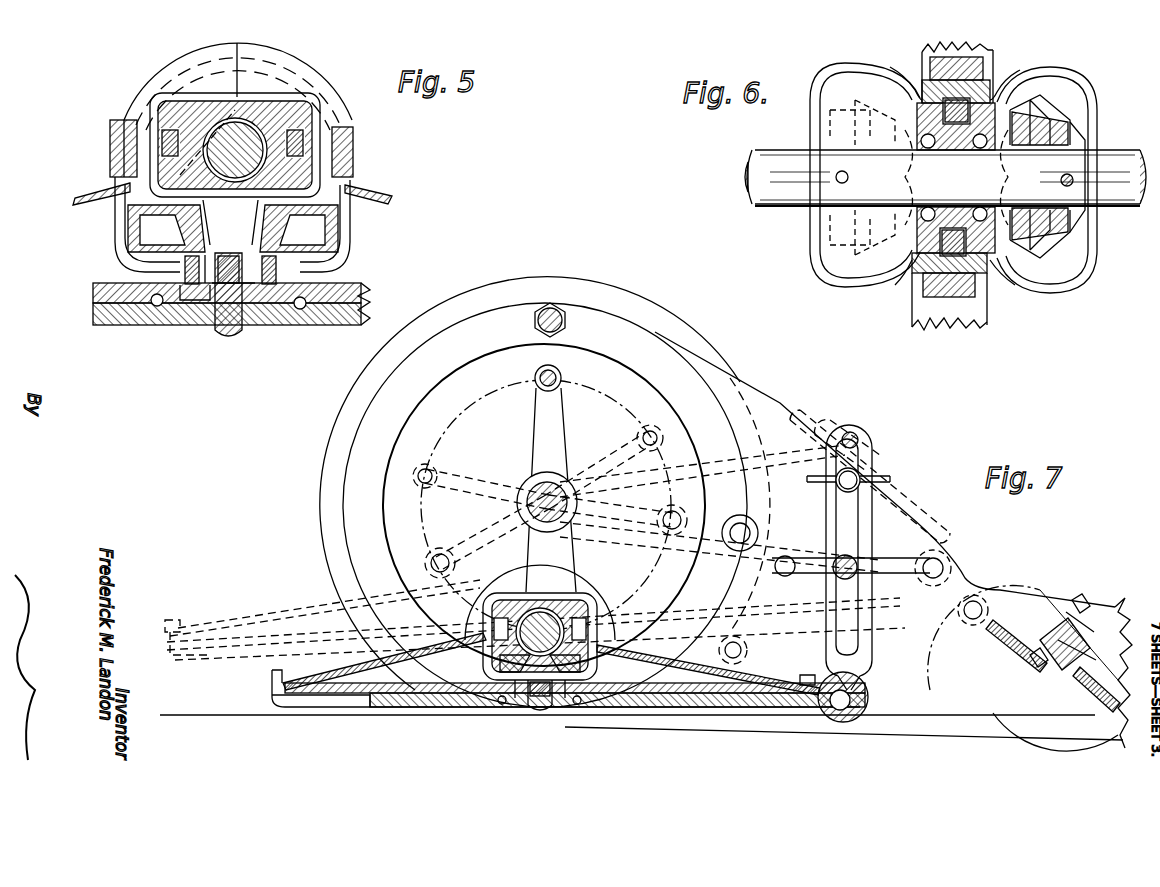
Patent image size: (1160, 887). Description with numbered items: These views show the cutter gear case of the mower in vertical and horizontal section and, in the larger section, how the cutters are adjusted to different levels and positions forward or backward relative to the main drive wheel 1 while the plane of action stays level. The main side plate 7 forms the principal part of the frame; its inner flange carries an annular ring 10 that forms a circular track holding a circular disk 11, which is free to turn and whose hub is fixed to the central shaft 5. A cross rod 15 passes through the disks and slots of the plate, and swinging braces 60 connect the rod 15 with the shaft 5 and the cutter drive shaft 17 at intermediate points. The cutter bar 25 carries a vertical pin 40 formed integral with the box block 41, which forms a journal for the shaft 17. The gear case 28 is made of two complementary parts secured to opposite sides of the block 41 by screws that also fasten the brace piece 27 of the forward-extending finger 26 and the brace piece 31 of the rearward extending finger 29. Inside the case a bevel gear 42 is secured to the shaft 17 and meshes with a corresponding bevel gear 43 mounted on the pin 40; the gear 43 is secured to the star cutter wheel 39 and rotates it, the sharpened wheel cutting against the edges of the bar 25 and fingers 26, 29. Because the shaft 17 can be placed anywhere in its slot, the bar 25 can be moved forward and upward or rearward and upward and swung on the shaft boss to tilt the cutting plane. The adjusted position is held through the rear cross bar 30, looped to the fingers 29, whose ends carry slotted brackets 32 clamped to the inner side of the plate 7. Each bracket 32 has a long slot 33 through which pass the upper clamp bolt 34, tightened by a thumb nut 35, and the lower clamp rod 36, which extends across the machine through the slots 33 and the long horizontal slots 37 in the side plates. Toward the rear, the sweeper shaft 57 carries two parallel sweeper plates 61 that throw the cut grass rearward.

In FIG. 7, the main drive wheel 1 is at (336, 425).
In FIG. 7, the central shaft 5 is at (535, 485).
In FIG. 7, the main side plate 7 is at (765, 400).
In FIG. 7, the annular ring 10 is at (544, 505).
In FIG. 7, the circular disk 11 is at (546, 505).
In FIG. 7, the cross rod 15 is at (560, 378).
In FIG. 5, the cutter drive shaft 17 is at (262, 122).
In FIG. 6, the cutter drive shaft 17 is at (945, 178).
In FIG. 7, the cutter drive shaft 17 is at (560, 605).
In FIG. 5, the cutter bar 25 is at (248, 330).
In FIG. 7, the cutter bar 25 is at (530, 708).
In FIG. 7, the forward-extending finger 26 is at (315, 708).
In FIG. 5, the brace piece 27 is at (108, 186).
In FIG. 6, the brace piece 27 is at (994, 62).
In FIG. 7, the brace piece 27 is at (340, 675).
In FIG. 5, the gear case 28 is at (206, 92).
In FIG. 6, the gear case 28 is at (1068, 88).
In FIG. 7, the gear case 28 is at (486, 676).
In FIG. 7, the rearward extending finger 29 is at (732, 722).
In FIG. 7, the rear cross bar 30 is at (862, 682).
In FIG. 5, the brace piece 31 is at (372, 190).
In FIG. 6, the brace piece 31 is at (985, 312).
In FIG. 7, the brace piece 31 is at (730, 682).
In FIG. 7, the slotted bracket 32 is at (840, 430).
In FIG. 7, the long slot 33 is at (858, 445).
In FIG. 7, the upper clamp bolt 34 is at (868, 473).
In FIG. 7, the thumb nut 35 is at (892, 482).
In FIG. 7, the rod 36 is at (851, 567).
In FIG. 7, the horizontal slot 37 is at (945, 560).
In FIG. 5, the cutter wheel 39 is at (330, 290).
In FIG. 7, the cutter wheel 39 is at (662, 700).
In FIG. 5, the vertical pin 40 is at (206, 300).
In FIG. 7, the vertical pin 40 is at (515, 700).
In FIG. 5, the box block 41 is at (322, 112).
In FIG. 6, the box block 41 is at (915, 268).
In FIG. 7, the box block 41 is at (486, 632).
In FIG. 5, the bevel gear 42 is at (310, 212).
In FIG. 6, the bevel gear 42 is at (1070, 225).
In FIG. 5, the bevel gear 43 is at (145, 240).
In FIG. 7, the sweeper shaft 57 is at (1060, 640).
In FIG. 7, the swinging brace 60 is at (565, 410).
In FIG. 7, the sweeper plate 61 is at (1020, 648).